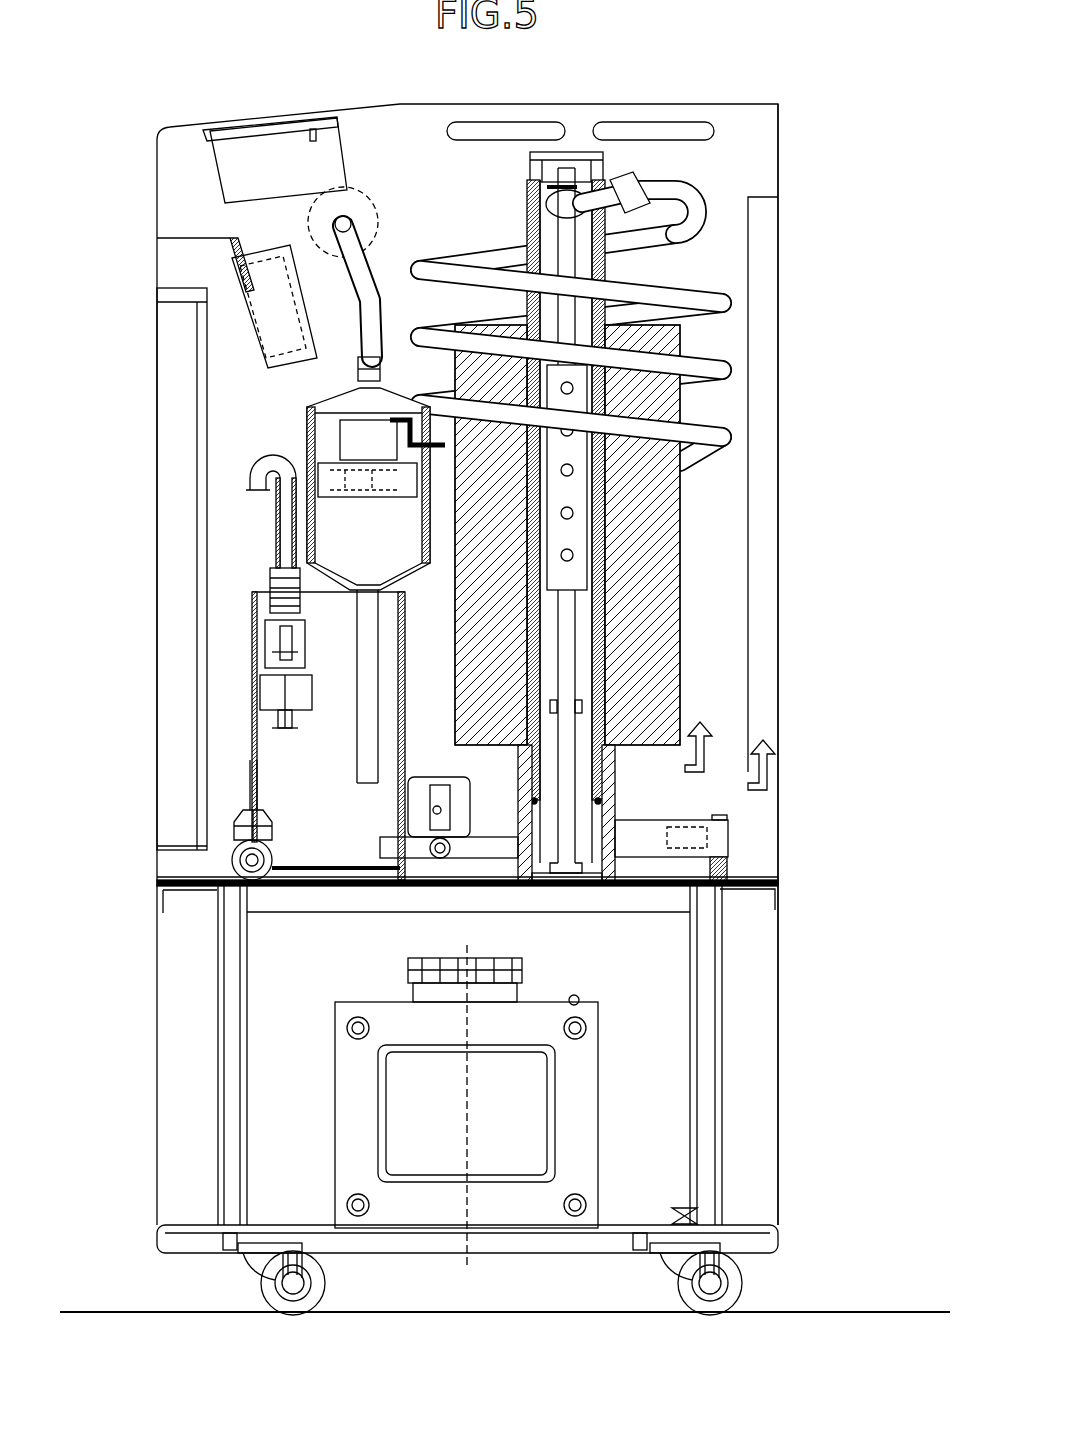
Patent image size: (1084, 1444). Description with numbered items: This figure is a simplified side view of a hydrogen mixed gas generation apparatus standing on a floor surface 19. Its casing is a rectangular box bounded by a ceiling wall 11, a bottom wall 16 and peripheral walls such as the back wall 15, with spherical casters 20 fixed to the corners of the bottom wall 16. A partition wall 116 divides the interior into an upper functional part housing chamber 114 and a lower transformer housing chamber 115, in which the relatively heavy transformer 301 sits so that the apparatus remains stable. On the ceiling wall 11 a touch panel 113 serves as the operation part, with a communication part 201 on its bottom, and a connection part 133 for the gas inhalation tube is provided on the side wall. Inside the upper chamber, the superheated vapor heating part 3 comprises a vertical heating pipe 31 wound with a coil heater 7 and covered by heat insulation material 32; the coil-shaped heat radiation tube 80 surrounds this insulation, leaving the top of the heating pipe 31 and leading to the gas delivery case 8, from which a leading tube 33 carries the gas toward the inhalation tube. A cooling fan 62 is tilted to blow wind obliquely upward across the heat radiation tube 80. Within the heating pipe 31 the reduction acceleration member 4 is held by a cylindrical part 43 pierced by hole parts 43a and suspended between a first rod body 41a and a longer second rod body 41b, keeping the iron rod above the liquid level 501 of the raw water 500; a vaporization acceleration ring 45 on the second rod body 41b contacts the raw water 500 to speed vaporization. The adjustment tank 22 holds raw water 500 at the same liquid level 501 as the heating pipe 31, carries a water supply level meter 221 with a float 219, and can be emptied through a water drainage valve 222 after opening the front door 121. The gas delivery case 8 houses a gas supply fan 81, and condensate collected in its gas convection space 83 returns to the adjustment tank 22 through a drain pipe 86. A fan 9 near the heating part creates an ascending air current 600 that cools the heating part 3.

The ceiling wall 11 is at (632, 104).
The back wall 15 is at (778, 156).
The floor surface 19 is at (897, 1310).
The touch panel 113 is at (250, 128).
The communication part 201 is at (318, 127).
The connection part 133 is at (320, 222).
The leading tube 33 is at (372, 268).
The cooling fan 62 is at (242, 305).
The front door 121 is at (195, 345).
The heat radiation tube 80 is at (715, 295).
The heating pipe 31 is at (530, 208).
The first rod body 41a is at (600, 259).
The second rod body 41b is at (582, 641).
The vaporization acceleration ring 45 is at (583, 708).
The heat insulation material 32 is at (643, 588).
The superheated vapor heating part 3 is at (690, 495).
The reduction acceleration member 4 is at (606, 526).
The coil heater 7 is at (600, 543).
The cylindrical part 43 is at (580, 394).
The hole parts 43a is at (727, 436).
The functional part housing chamber 114 is at (758, 827).
The ascending air current 600 is at (700, 773).
The gas delivery case 8 is at (295, 428).
The gas supply fan 81 is at (350, 470).
The gas convection space 83 is at (327, 538).
The water supply level meter 221 is at (262, 518).
The drain pipe 86 is at (357, 643).
The float 219 is at (268, 702).
The liquid level 501 is at (395, 690).
The adjustment tank 22 is at (250, 610).
The raw water 500 is at (278, 762).
The water drainage valve 222 is at (247, 862).
The fan 9 is at (730, 843).
The bottom wall 16 is at (745, 893).
The partition wall 116 is at (635, 886).
The transformer housing chamber 115 is at (672, 1123).
The transformer 301 is at (533, 1208).
The casters 20 is at (742, 1290).